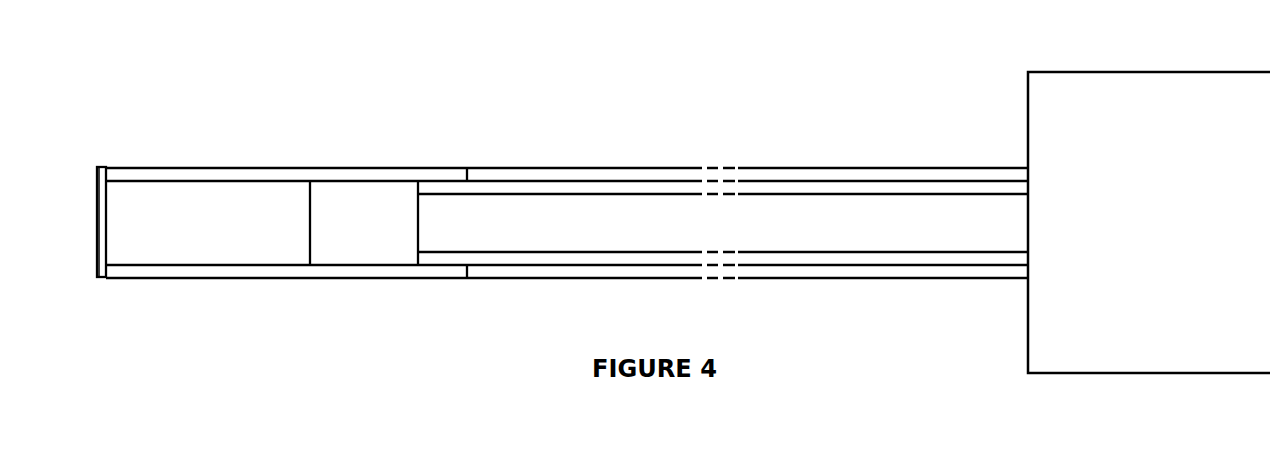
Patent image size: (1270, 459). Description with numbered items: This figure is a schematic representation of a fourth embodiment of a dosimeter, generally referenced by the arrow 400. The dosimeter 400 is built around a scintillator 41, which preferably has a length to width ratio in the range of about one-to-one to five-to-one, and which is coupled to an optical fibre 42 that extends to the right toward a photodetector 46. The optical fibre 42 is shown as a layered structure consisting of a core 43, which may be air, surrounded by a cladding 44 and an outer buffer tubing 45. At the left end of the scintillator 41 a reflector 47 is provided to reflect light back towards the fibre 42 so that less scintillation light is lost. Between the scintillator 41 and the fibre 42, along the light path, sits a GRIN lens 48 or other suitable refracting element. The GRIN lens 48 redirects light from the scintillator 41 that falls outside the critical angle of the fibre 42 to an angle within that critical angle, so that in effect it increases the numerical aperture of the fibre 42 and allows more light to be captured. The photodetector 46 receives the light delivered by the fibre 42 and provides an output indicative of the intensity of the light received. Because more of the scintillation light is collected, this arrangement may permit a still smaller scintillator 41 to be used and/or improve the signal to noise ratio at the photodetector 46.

The dosimeter 400 is at (447, 100).
The scintillator 41 is at (198, 237).
The optical fibre 42 is at (608, 181).
The core 43 is at (588, 240).
The cladding 44 is at (535, 190).
The buffer tubing 45 is at (638, 270).
The photodetector 46 is at (1181, 238).
The reflector 47 is at (110, 167).
The GRIN lens 48 is at (378, 237).